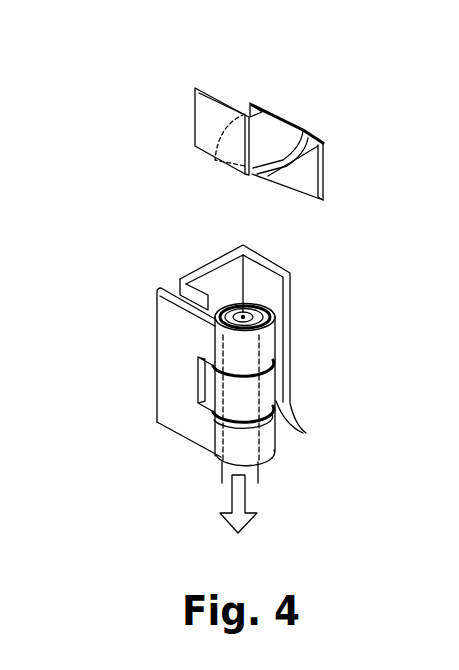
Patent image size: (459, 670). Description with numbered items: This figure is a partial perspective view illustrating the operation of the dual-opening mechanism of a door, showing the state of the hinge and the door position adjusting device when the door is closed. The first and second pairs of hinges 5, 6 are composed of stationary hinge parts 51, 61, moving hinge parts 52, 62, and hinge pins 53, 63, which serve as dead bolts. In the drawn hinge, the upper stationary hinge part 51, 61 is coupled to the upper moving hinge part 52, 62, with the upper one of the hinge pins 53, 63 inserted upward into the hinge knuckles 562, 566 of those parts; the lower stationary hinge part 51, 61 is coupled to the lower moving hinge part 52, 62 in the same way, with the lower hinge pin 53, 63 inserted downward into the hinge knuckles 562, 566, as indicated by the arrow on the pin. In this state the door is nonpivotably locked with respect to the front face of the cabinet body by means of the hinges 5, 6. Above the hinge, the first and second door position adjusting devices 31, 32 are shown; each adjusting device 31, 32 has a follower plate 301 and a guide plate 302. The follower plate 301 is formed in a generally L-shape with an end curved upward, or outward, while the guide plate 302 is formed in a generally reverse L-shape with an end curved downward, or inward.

The first pair of hinges 5 is at (222, 367).
The second pair of hinges 6 is at (222, 367).
The first door position adjusting device 31 is at (321, 116).
The second door position adjusting device 32 is at (321, 116).
The follower plate 301 is at (266, 137).
The guide plate 302 is at (292, 172).
The stationary hinge part 51 is at (206, 302).
The stationary hinge part 61 is at (207, 267).
The moving hinge part 52 is at (197, 396).
The moving hinge part 62 is at (197, 396).
The hinge pin 53 is at (299, 381).
The hinge pin 63 is at (246, 312).
The hinge knuckle 562 is at (218, 412).
The hinge knuckle 566 is at (266, 442).